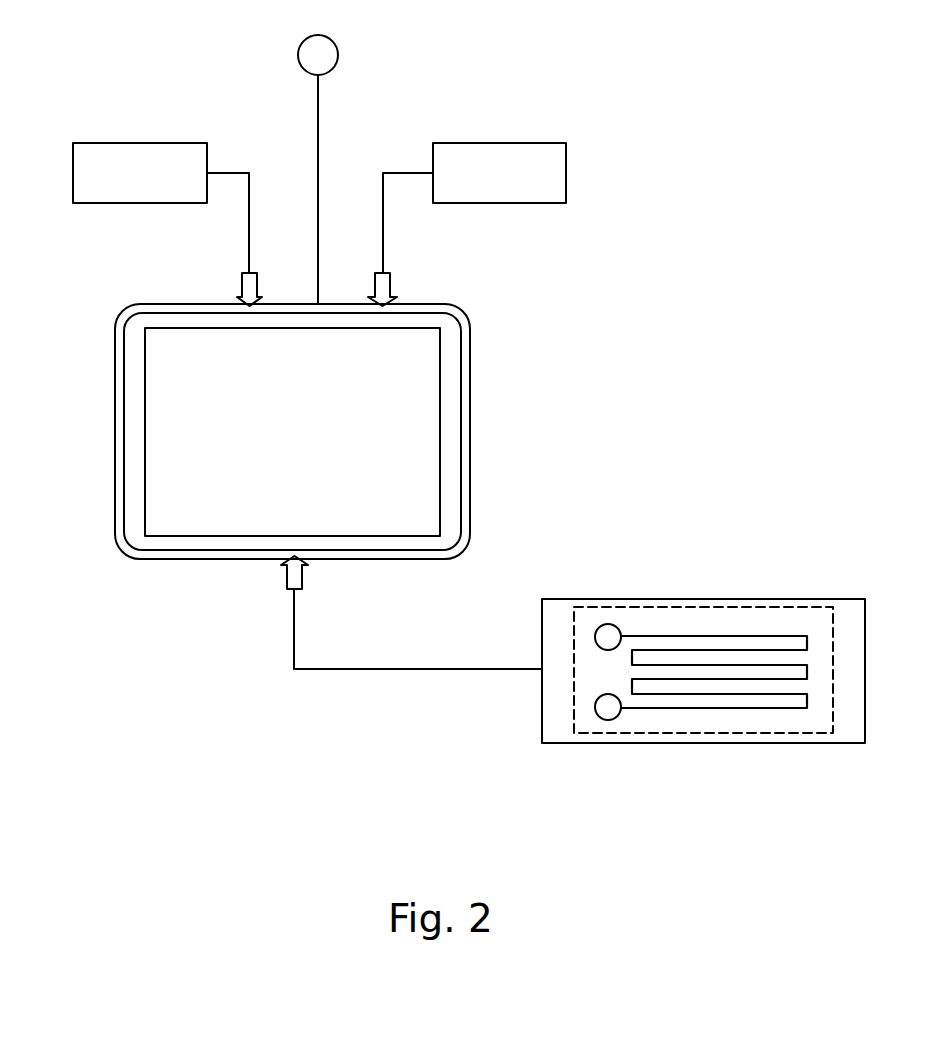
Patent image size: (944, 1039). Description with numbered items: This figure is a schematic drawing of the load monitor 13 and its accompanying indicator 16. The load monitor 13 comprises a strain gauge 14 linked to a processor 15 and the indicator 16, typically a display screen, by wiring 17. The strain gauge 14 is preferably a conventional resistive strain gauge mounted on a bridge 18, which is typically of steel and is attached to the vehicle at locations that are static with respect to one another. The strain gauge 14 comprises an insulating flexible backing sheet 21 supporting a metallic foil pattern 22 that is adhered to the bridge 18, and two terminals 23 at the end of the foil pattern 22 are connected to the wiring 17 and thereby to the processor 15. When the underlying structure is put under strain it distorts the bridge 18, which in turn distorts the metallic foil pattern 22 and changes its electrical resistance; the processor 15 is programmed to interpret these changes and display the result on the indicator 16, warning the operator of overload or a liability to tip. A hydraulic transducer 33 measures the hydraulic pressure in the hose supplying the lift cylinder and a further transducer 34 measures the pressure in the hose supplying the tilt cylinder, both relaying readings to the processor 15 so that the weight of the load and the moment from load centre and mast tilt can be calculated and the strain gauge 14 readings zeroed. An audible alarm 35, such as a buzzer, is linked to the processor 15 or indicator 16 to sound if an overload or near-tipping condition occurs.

The load monitor 13 is at (394, 427).
The strain gauge 14 is at (676, 677).
The processor 15 is at (467, 505).
The indicator 16 is at (407, 408).
The wiring 17 is at (332, 668).
The bridge 18 is at (657, 597).
The insulating flexible backing sheet 21 is at (692, 735).
The metallic foil pattern 22 is at (722, 634).
The terminals 23 is at (600, 627).
The hydraulic transducer 33 is at (146, 159).
The further transducer 34 is at (475, 160).
The audible alarm 35 is at (335, 48).